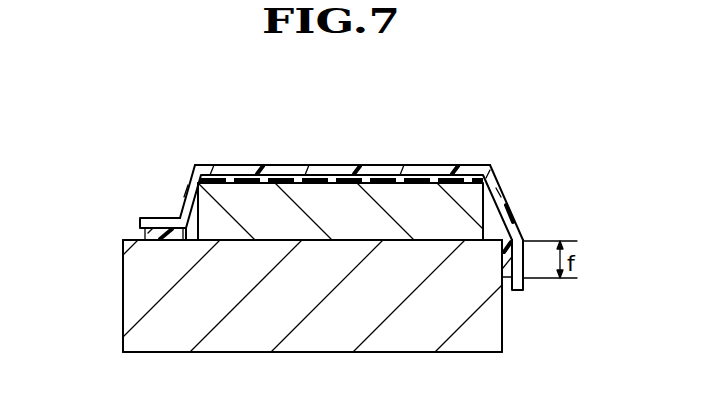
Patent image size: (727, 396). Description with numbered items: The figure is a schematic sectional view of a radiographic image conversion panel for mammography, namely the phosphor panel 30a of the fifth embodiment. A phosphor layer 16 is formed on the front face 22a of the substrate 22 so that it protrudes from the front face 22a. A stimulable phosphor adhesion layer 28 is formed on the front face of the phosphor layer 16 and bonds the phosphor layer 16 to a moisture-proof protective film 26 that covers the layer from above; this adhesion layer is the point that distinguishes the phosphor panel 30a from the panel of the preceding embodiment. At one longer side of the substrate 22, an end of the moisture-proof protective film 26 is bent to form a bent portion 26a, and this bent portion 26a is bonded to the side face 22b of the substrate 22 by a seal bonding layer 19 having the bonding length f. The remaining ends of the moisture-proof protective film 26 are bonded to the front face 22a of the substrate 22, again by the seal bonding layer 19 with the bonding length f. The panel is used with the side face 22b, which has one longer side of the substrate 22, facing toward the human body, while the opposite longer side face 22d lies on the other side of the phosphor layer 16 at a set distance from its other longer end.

The phosphor panel 30a is at (467, 107).
The phosphor layer 16 is at (297, 211).
The stimulable phosphor adhesion layer 28 is at (355, 181).
The moisture-proof protective film 26 is at (405, 170).
The bent portion 26a is at (152, 222).
The substrate 22 is at (140, 330).
The front face 22a is at (488, 237).
The side face 22b is at (502, 332).
The side face 22d is at (123, 290).
The seal bonding layer 19 is at (152, 234).